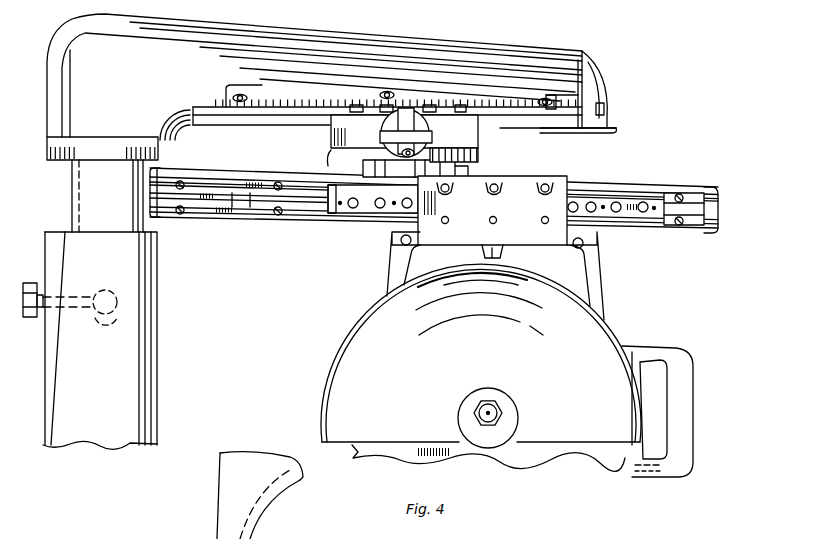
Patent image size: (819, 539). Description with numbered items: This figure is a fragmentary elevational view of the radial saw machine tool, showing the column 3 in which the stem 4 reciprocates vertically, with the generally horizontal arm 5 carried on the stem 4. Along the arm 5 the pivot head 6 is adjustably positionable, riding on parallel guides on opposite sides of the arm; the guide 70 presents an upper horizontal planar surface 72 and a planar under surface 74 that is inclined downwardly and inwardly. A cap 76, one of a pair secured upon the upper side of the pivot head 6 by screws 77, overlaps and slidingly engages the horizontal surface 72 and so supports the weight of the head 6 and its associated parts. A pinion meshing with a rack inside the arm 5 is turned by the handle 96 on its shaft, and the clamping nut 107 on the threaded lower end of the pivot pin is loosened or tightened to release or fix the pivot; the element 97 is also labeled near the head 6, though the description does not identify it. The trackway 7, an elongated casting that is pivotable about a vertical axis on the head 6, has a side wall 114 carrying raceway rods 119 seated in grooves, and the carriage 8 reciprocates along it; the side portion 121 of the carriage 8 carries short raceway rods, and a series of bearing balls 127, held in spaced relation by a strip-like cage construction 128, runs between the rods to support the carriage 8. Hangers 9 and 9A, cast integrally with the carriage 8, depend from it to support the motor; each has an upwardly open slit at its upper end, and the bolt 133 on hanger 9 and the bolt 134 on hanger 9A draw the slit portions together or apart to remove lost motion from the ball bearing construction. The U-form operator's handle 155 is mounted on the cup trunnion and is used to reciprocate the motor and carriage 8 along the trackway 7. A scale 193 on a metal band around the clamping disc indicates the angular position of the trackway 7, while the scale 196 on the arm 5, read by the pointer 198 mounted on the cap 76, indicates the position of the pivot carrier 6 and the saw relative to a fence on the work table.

The column 3 is at (144, 393).
The stem 4 is at (71, 210).
The arm 5 is at (547, 58).
The pivot head 6 is at (331, 138).
The trackway 7 is at (318, 216).
The carriage 8 is at (446, 240).
The hanger 9 is at (391, 266).
The hanger 9A is at (592, 270).
The guide 70 is at (519, 130).
The upper horizontal planar surface 72 is at (548, 130).
The planar under surface 74 is at (561, 131).
The cap 76 is at (480, 130).
The screws 77 is at (461, 108).
The handle 96 is at (406, 132).
The lug 97 is at (326, 165).
The clamping nut 107 is at (450, 178).
The side wall 114 is at (251, 200).
The rods 119 is at (236, 196).
The side portion 121 is at (516, 240).
The bearing balls 127 is at (354, 210).
The cage construction 128 is at (370, 210).
The bolt 133 is at (400, 242).
The bolt 134 is at (584, 244).
The operator's handle 155 is at (692, 414).
The scale 193 is at (450, 166).
The scale 196 is at (268, 90).
The pointer 198 is at (362, 104).